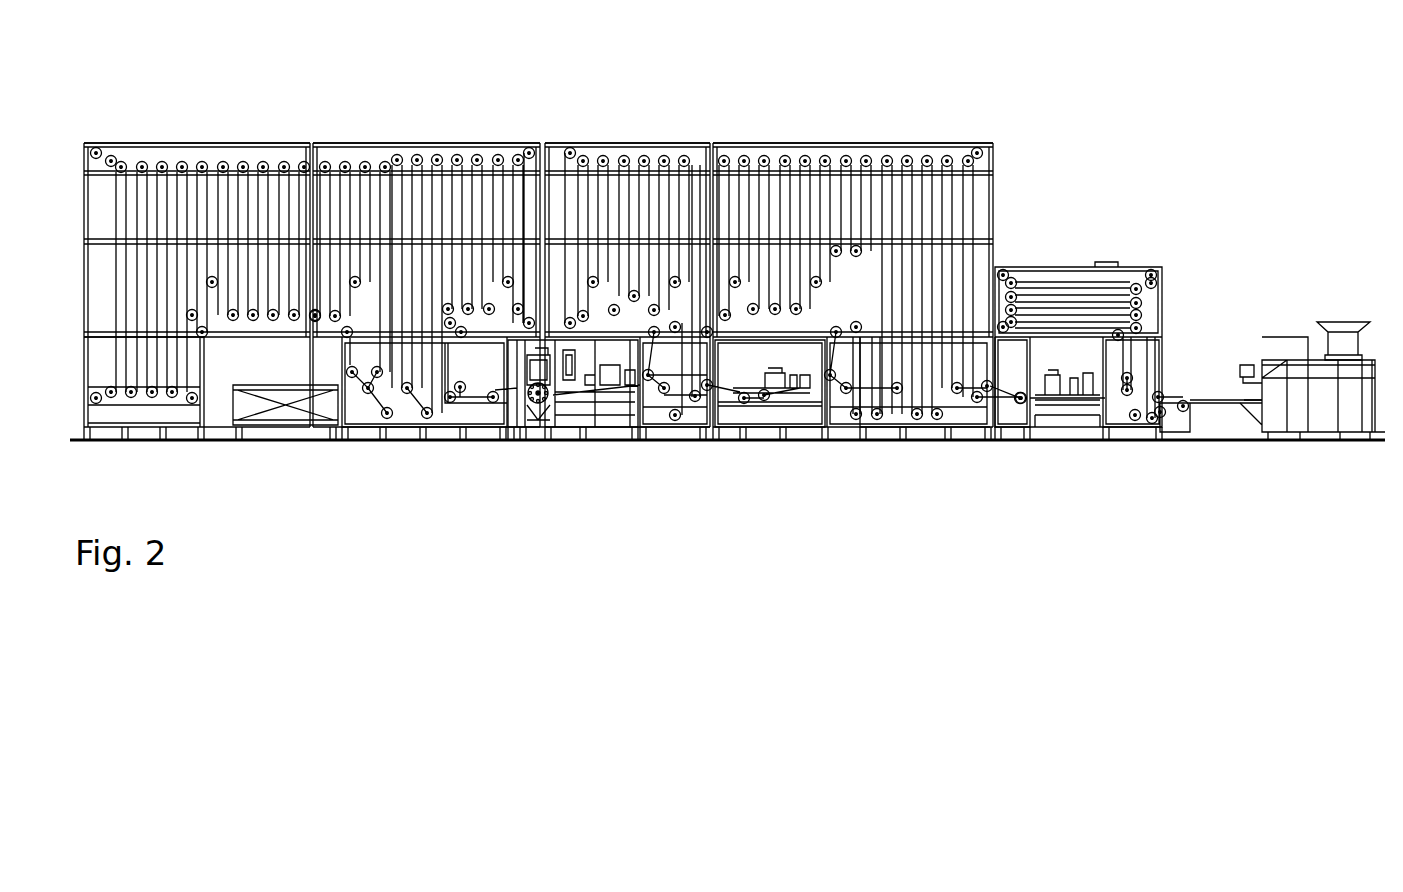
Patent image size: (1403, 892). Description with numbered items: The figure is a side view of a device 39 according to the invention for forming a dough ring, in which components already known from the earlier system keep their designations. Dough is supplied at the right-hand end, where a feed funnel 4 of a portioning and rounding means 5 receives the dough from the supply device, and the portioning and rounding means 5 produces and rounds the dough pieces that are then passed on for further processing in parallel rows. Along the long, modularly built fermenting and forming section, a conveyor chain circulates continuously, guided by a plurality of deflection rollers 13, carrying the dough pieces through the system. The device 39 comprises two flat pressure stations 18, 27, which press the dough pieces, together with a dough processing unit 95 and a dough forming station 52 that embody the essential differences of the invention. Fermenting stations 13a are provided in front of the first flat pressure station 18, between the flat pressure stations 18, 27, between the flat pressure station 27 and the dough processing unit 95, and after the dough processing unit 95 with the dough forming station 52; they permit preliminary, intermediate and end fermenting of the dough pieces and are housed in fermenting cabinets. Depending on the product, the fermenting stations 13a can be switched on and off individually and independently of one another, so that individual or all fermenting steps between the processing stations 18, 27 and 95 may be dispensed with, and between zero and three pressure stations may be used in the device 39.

The deflection rollers 13 is at (440, 160).
The fermenting stations 13a is at (835, 176).
The device for forming a dough ring 39 is at (1058, 120).
The dough forming station 52 is at (537, 424).
The dough processing unit 95 is at (553, 455).
The flat pressure station 27 is at (756, 420).
The flat pressure station 18 is at (1064, 422).
The portioning and rounding means 5 is at (1282, 432).
The feed funnel 4 is at (1342, 332).